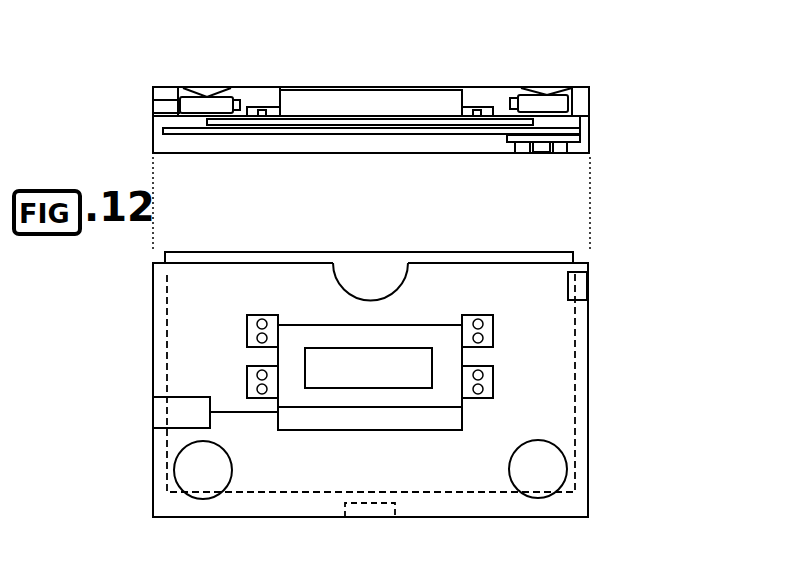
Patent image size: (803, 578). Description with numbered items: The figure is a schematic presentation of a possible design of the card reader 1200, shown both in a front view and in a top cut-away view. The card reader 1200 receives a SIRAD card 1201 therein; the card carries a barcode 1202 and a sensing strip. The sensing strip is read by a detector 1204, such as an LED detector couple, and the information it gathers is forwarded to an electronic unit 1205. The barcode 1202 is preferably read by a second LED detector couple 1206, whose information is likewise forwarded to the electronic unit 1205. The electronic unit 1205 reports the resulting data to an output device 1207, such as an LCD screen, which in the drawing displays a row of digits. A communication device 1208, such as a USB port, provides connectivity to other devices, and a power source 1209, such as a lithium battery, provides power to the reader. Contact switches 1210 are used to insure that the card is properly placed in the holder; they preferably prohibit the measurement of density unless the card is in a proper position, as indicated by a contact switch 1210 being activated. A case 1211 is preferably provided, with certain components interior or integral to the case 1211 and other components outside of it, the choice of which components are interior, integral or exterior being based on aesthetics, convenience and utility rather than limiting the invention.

The card reader 1200 is at (590, 88).
The SIRAD card 1201 is at (588, 114).
The barcode 1202 is at (588, 140).
The detector 1204 is at (266, 107).
The electronic unit 1205 is at (325, 430).
The second LED detector couple 1206 is at (562, 153).
The output device 1207 is at (338, 87).
The communication device 1208 is at (158, 420).
The power source 1209 is at (581, 87).
The contact switches 1210 is at (230, 87).
The case 1211 is at (554, 347).